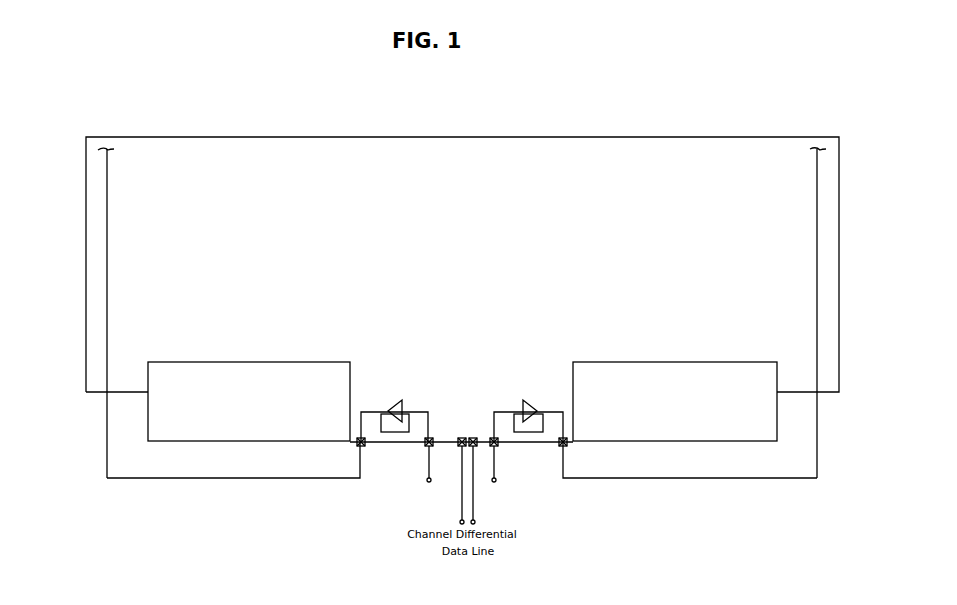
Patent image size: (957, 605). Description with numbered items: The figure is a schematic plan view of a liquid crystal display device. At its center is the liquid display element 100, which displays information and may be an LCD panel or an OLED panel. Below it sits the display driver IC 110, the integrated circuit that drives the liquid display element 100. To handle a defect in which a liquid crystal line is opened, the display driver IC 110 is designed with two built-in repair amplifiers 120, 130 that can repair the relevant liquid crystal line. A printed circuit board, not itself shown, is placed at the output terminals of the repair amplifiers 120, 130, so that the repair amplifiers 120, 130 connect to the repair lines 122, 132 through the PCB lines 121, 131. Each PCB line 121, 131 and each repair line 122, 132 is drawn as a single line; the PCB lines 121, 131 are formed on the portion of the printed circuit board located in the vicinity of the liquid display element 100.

The liquid display element 100 is at (475, 148).
The display driver IC 110 is at (777, 418).
The repair amplifier 120 is at (398, 418).
The PCB line 121 is at (180, 478).
The repair line 122 is at (107, 182).
The repair amplifier 130 is at (527, 418).
The PCB line 131 is at (722, 478).
The repair line 132 is at (817, 182).